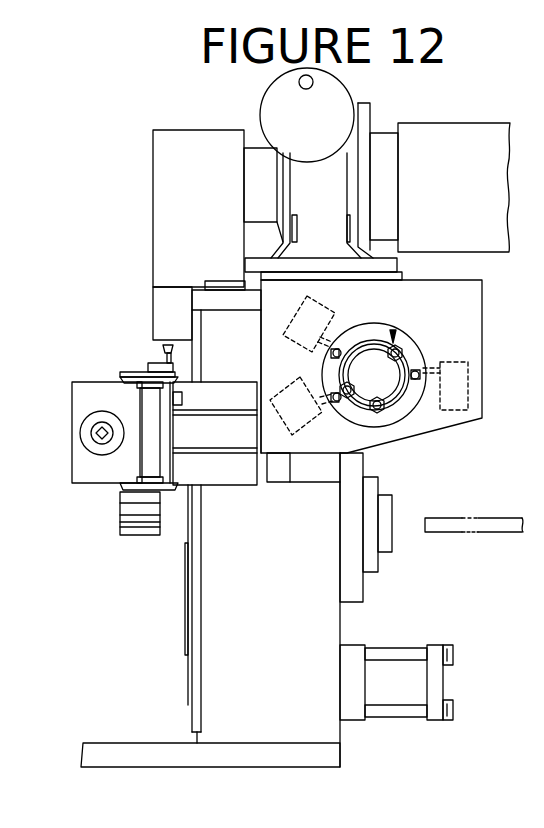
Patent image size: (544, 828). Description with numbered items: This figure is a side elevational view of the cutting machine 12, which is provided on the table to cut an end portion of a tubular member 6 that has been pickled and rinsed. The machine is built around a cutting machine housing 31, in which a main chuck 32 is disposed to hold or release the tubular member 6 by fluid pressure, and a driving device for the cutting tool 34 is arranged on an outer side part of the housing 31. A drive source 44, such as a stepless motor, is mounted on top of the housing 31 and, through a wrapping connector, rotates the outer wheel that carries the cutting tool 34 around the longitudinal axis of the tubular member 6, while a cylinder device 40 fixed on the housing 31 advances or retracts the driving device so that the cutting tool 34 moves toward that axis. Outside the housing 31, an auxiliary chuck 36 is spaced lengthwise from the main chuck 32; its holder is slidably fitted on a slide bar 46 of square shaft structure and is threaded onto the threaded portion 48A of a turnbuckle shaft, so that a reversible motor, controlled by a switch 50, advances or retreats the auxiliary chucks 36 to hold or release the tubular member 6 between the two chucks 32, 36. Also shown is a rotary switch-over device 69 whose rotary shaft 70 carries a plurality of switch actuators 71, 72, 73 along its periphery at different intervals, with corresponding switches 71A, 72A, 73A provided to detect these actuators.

The cutting machine 12 is at (150, 255).
The drive source 44 is at (208, 137).
The switch 50 is at (163, 346).
The threaded portion 48A is at (102, 424).
The slide bar 46 is at (152, 450).
The auxiliary chuck 36 is at (112, 516).
The cutting tool 34 is at (185, 562).
The cutting machine housing 31 is at (210, 703).
The main chuck 32 is at (383, 545).
The cylinder device 40 is at (398, 645).
The tubular member 6 is at (480, 527).
The switch actuator 73 is at (378, 410).
The rotary shaft 70 is at (388, 388).
The rotary switch-over device 69 is at (392, 332).
The switch actuator 71 is at (403, 353).
The switch actuator 72 is at (348, 400).
The switch 73A is at (468, 397).
The switch 71A is at (320, 295).
The switch 72A is at (300, 432).